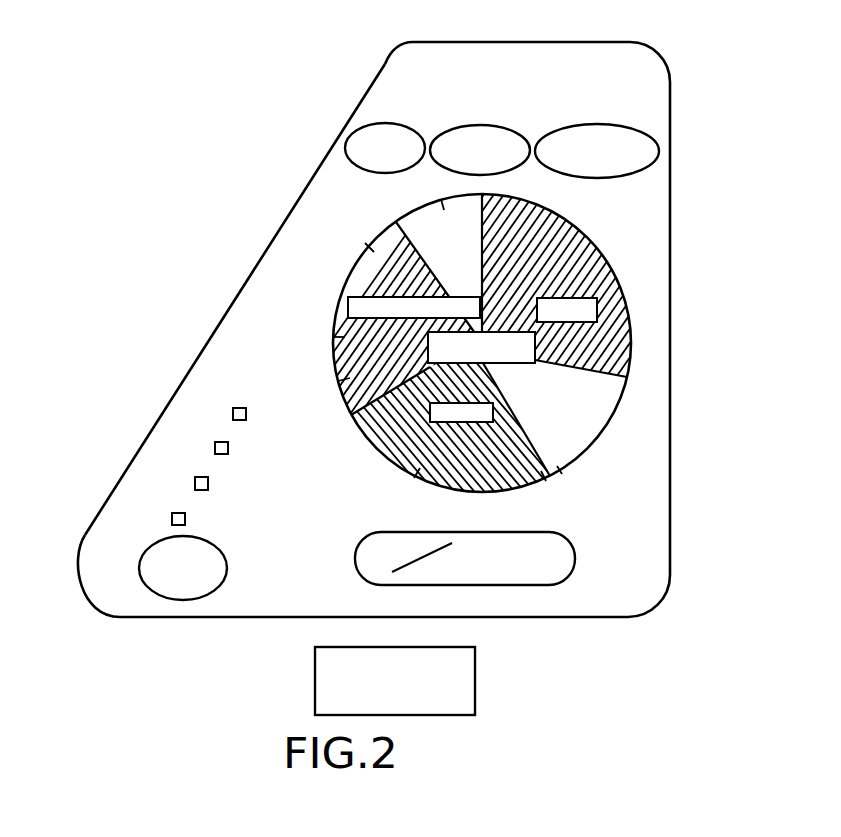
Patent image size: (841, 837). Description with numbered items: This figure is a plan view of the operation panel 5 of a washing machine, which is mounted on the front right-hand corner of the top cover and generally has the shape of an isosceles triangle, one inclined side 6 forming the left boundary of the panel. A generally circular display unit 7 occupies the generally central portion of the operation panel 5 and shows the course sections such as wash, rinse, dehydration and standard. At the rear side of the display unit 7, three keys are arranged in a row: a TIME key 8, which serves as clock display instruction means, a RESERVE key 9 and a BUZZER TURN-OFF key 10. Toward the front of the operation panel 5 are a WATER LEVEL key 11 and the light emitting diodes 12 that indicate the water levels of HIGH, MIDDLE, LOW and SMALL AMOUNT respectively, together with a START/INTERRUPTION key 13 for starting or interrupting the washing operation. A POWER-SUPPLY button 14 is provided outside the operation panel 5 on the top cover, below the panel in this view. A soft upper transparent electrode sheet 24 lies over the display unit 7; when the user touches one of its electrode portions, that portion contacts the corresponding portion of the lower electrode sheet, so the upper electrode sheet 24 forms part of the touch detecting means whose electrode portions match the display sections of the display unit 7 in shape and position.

The operation panel 5 is at (680, 240).
The inclined portion of panel 6 is at (228, 300).
The display unit 7 is at (623, 317).
The TIME key 8 is at (390, 122).
The RESERVE key 9 is at (478, 123).
The BUZZER TURN-OFF key 10 is at (593, 123).
The WATER LEVEL key 11 is at (138, 567).
The light emitting diodes 12 is at (200, 472).
The START/INTERRUPTION key 13 is at (557, 585).
The POWER-SUPPLY button 14 is at (475, 680).
The upper transparent electrode sheet 24 is at (590, 400).